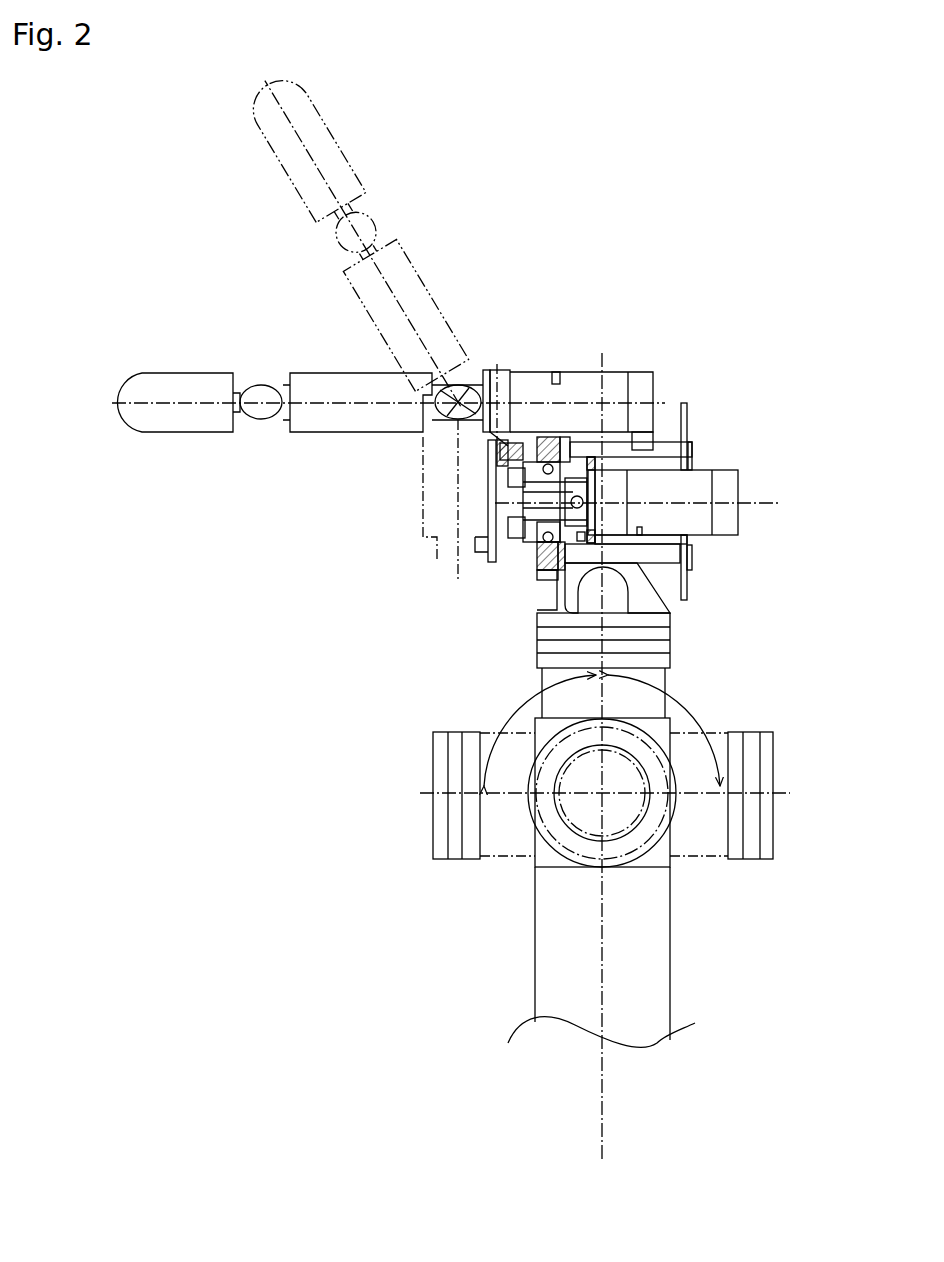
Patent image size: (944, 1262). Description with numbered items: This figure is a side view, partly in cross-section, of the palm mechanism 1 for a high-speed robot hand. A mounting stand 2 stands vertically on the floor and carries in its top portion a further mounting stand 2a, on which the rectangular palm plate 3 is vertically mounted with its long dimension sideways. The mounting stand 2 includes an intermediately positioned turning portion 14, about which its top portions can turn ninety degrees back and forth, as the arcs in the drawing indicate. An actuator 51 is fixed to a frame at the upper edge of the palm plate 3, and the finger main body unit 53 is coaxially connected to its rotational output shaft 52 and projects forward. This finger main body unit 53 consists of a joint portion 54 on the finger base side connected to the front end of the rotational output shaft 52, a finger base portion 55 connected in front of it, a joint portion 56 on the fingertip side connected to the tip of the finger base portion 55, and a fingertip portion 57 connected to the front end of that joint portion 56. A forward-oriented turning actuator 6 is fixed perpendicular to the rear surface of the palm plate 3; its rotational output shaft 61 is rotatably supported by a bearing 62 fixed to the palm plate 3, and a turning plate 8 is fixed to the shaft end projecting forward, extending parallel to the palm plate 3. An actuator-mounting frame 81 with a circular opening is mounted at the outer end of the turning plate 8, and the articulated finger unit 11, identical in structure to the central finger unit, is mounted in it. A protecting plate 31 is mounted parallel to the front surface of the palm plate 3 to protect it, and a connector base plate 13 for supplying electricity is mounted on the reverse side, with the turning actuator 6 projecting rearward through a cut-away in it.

The palm mechanism 1 is at (681, 195).
The mounting stand 2 is at (672, 950).
The mounting stand 2a is at (555, 595).
The palm plate 3 is at (556, 568).
The turning actuator 6 is at (730, 500).
The turning plate 8 is at (589, 455).
The articulated finger unit 11 is at (245, 252).
The connector base plate 13 is at (688, 578).
The turning portion 14 is at (708, 875).
The protecting plate 31 is at (488, 548).
The actuator 51 is at (568, 395).
The rotational output shaft 52 is at (496, 368).
The finger main body unit 53 is at (138, 320).
The joint portion 54 is at (440, 385).
The finger base portion 55 is at (320, 380).
The joint portion 56 is at (255, 388).
The fingertip portion 57 is at (160, 385).
The rotational output shaft 61 is at (520, 488).
The bearing 62 is at (540, 548).
The actuator-mounting frame 81 is at (510, 445).